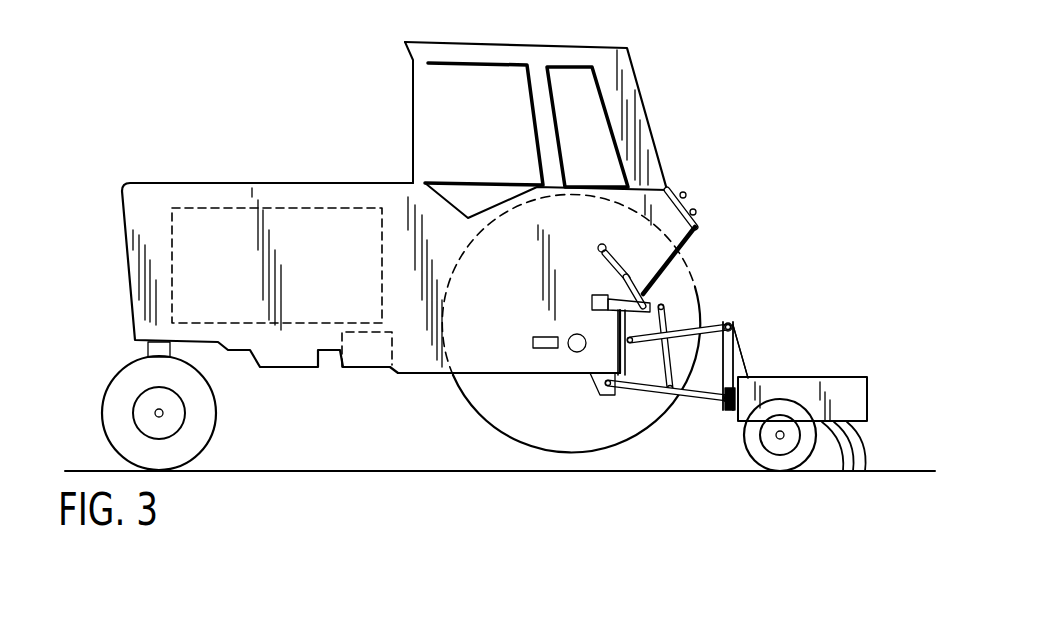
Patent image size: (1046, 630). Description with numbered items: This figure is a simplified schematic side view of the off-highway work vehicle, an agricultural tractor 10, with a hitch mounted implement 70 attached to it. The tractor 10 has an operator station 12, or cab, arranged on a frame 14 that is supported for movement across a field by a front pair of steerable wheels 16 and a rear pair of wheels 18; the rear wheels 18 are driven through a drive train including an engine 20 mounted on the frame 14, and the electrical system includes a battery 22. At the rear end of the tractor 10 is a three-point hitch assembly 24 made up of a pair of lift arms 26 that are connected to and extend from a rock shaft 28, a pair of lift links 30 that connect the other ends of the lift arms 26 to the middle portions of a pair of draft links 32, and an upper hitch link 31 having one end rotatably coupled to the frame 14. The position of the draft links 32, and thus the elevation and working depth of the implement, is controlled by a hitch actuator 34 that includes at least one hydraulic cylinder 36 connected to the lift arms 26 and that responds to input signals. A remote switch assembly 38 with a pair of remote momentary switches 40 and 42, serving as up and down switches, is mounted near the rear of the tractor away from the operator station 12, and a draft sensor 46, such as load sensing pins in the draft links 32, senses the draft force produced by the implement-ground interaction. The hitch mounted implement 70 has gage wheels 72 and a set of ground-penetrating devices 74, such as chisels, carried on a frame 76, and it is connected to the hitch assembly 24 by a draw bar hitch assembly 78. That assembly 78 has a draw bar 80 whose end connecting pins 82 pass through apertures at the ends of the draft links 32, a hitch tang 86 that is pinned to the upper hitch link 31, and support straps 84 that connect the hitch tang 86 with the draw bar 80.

The agricultural tractor 10 is at (236, 160).
The operator station 12 is at (505, 78).
The frame 14 is at (418, 350).
The front pair of steerable wheels 16 is at (128, 375).
The rear pair of wheels 18 is at (585, 462).
The engine 20 is at (285, 213).
The battery 22 is at (368, 350).
The hitch assembly 24 is at (684, 314).
The lift arms 26 is at (624, 282).
The rock shaft 28 is at (591, 298).
The lift links 30 is at (686, 262).
The upper hitch link 31 is at (731, 322).
The draft links 32 is at (707, 403).
The hitch actuator 34 is at (619, 238).
The hydraulic cylinder 36 is at (598, 248).
The remote switch assembly 38 is at (704, 193).
The remote momentary switch 40 is at (686, 193).
The remote momentary switch 42 is at (698, 213).
The draft sensor 46 is at (612, 394).
The hitch mounted implement 70 is at (836, 346).
The gage wheels 72 is at (792, 457).
The ground-penetrating devices 74 is at (867, 442).
The frame 76 is at (862, 387).
The draw bar hitch assembly 78 is at (762, 356).
The draw bar 80 is at (717, 404).
The connecting pins 82 is at (732, 418).
The support straps 84 is at (735, 350).
The hitch tang 86 is at (740, 322).